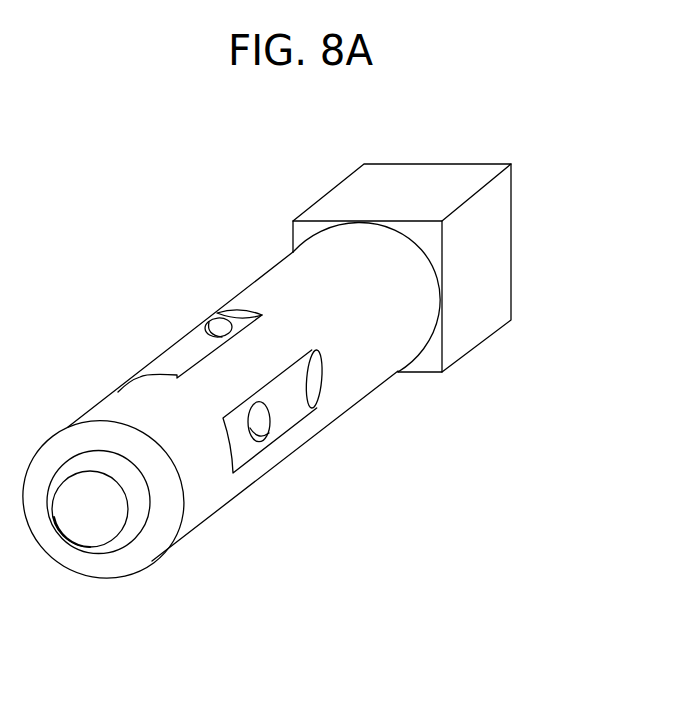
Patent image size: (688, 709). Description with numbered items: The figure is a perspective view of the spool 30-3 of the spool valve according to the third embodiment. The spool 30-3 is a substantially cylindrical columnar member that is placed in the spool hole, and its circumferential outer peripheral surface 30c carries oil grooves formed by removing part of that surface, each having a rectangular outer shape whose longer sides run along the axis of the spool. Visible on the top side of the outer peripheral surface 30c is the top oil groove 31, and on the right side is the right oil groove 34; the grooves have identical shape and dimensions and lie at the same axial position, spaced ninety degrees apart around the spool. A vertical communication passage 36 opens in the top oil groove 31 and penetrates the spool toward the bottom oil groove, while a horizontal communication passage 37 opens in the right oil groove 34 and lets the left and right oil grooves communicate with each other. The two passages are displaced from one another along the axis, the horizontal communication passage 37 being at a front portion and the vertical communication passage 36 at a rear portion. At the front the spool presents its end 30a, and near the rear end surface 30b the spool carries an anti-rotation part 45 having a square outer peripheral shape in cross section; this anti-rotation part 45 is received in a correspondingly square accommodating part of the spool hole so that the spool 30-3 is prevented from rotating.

The spool 30-3 is at (255, 263).
The front opening 30a is at (93, 522).
The rear end surface 30b is at (512, 233).
The outer peripheral surface 30c is at (347, 382).
The top oil groove 31 is at (165, 367).
The right oil groove 34 is at (288, 412).
The vertical communication passage 36 is at (217, 325).
The horizontal communication passage 37 is at (267, 437).
The anti-rotation part 45 is at (495, 295).